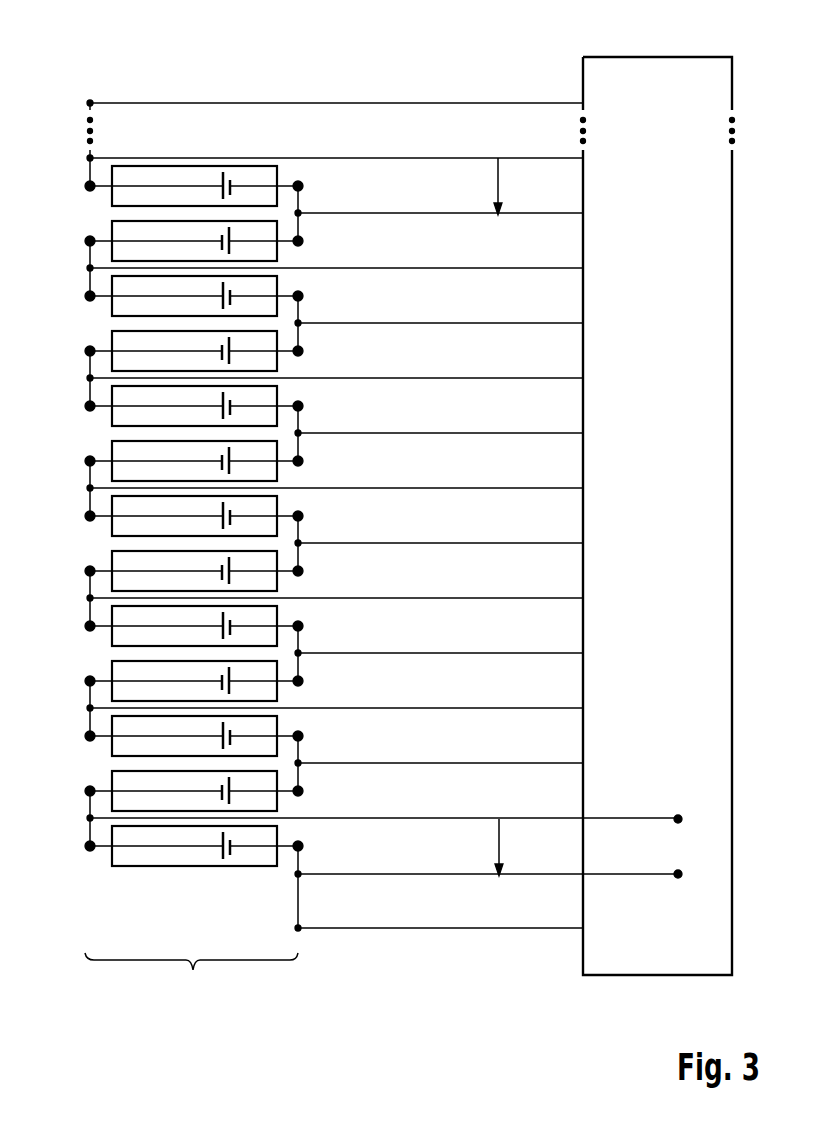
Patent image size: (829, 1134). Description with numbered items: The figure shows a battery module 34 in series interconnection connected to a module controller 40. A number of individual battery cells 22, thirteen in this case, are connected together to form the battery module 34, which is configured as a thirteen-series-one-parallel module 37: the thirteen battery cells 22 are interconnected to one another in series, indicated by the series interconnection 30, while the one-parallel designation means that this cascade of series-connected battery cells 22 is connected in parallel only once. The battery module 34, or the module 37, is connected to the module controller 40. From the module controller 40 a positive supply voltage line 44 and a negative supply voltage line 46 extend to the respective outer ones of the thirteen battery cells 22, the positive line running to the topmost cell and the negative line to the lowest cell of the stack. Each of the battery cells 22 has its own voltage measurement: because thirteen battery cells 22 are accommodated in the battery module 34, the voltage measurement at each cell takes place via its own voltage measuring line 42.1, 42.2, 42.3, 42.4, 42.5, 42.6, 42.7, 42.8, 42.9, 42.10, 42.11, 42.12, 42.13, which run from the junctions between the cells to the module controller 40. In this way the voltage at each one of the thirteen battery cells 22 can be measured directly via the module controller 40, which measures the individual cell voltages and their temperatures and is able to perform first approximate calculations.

The battery cell 22 is at (112, 193).
The series interconnection 30 is at (387, 515).
The battery module 34 is at (191, 976).
The 13s1p module 37 is at (191, 976).
The module controller 40 is at (657, 57).
The voltage measuring line 42.1 is at (566, 818).
The voltage measuring line 42.2 is at (566, 763).
The voltage measuring line 42.3 is at (566, 708).
The voltage measuring line 42.4 is at (566, 653).
The voltage measuring line 42.5 is at (566, 598).
The voltage measuring line 42.6 is at (566, 543).
The voltage measuring line 42.7 is at (566, 488).
The voltage measuring line 42.8 is at (566, 433).
The voltage measuring line 42.9 is at (566, 378).
The voltage measuring line 42.10 is at (566, 323).
The voltage measuring line 42.11 is at (566, 268).
The voltage measuring line 42.12 is at (566, 213).
The voltage measuring line 42.13 is at (566, 158).
The supply voltage line (positive) 44 is at (475, 103).
The supply voltage line (negative) 46 is at (478, 930).